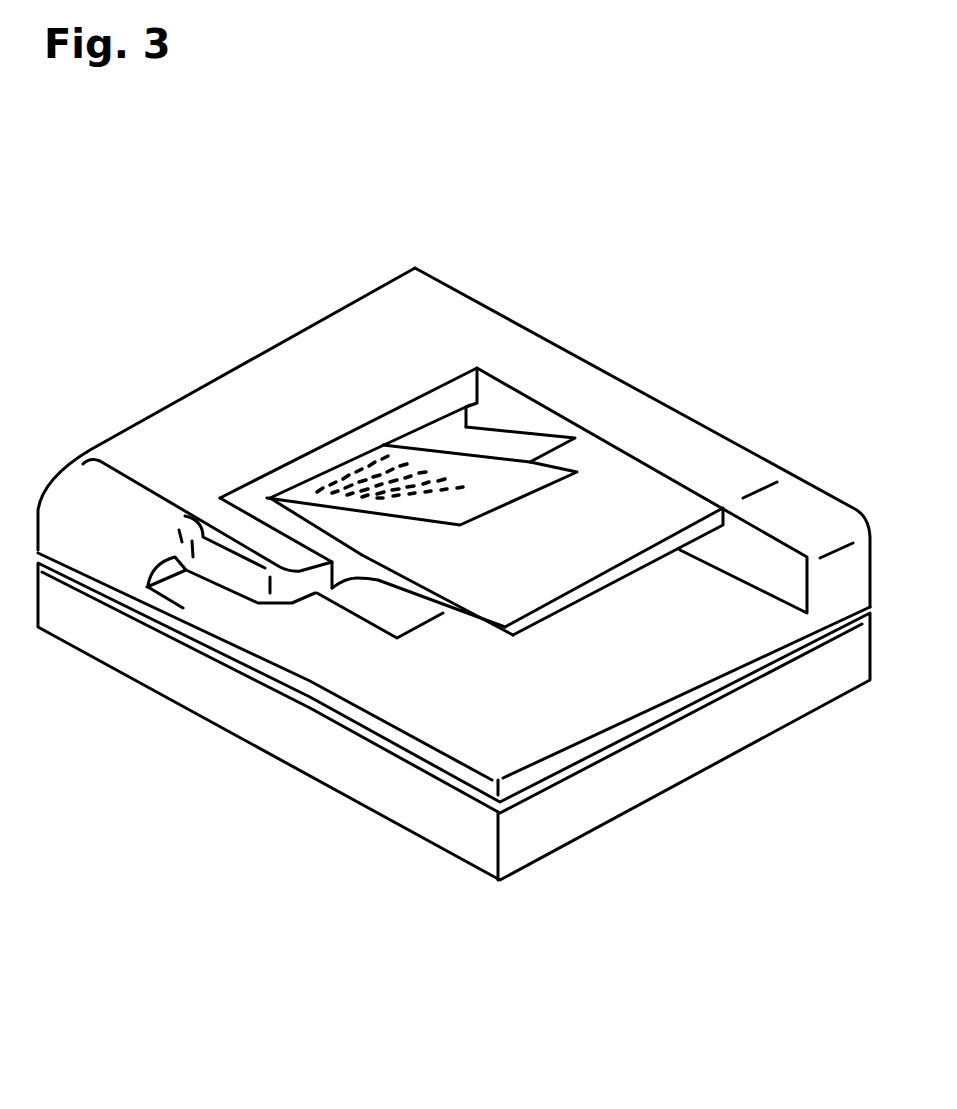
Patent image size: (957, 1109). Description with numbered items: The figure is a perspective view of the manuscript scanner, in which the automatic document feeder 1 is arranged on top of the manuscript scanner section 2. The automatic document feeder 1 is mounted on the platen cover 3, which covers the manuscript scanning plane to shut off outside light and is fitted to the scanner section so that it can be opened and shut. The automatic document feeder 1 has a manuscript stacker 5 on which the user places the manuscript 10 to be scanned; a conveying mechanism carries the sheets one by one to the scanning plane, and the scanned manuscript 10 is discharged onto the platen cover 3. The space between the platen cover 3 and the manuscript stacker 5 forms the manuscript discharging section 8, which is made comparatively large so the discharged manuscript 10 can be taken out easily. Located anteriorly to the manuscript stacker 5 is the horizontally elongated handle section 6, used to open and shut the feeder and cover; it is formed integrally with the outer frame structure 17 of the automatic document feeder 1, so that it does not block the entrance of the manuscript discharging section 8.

The automatic document feeder 1 is at (254, 322).
The manuscript scanner section 2 is at (730, 785).
The platen cover 3 is at (535, 732).
The manuscript stacker 5 is at (543, 443).
The handle section 6 is at (227, 563).
The manuscript discharging section 8 is at (325, 606).
The manuscript 10 is at (392, 613).
The outer frame structure 17 is at (160, 530).